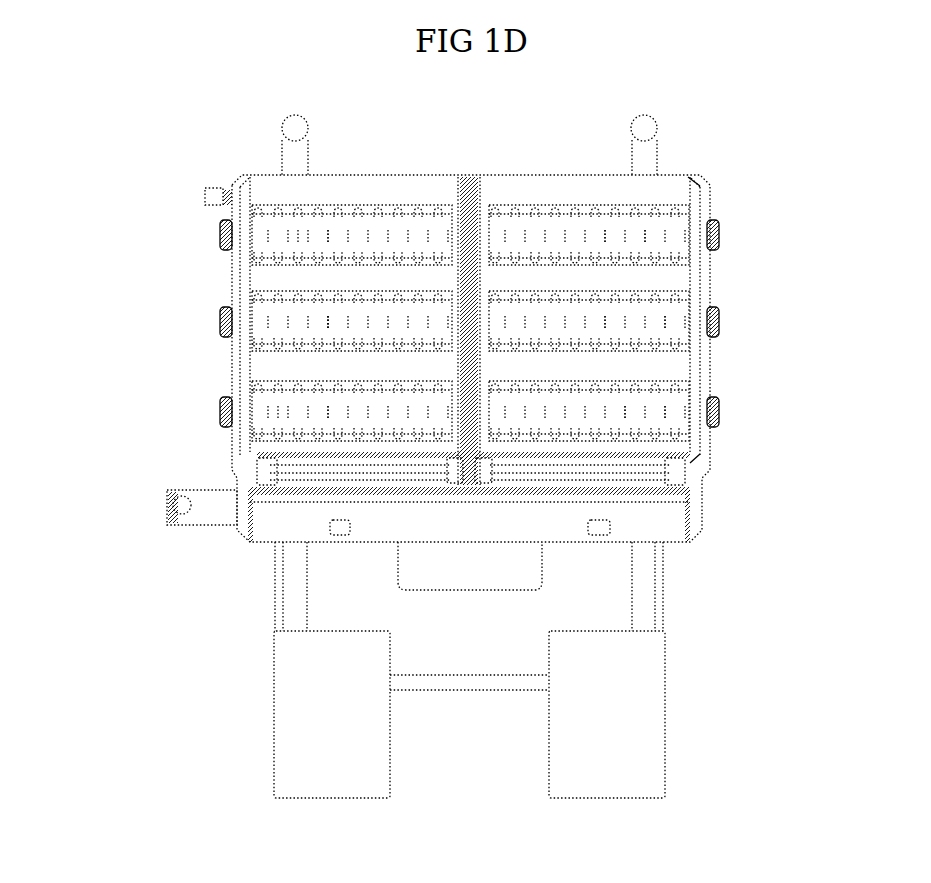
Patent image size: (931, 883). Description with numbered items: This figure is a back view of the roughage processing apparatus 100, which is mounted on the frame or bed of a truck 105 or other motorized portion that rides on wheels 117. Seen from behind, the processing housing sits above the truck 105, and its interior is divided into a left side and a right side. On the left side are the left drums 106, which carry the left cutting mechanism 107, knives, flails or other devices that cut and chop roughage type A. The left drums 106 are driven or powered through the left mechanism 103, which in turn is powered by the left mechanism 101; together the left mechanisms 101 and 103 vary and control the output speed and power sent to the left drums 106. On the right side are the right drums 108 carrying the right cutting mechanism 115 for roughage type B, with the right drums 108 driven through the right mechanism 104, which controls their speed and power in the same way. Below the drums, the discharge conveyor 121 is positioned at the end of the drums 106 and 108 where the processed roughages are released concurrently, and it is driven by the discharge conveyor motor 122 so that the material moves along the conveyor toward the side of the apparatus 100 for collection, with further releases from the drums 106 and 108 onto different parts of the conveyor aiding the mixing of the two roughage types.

The roughage processing apparatus 100 is at (800, 863).
The left driving mechanism 101 is at (207, 187).
The left driving mechanism 103 is at (228, 405).
The right driving mechanism 104 is at (717, 410).
The truck 105 is at (668, 587).
The left drums 106 is at (277, 413).
The left cutting mechanism 107 is at (330, 415).
The right drums 108 is at (660, 405).
The right cutting mechanism 115 is at (630, 400).
The wheels 117 is at (274, 733).
The discharge conveyor 121 is at (167, 490).
The discharge conveyor motor 122 is at (180, 503).